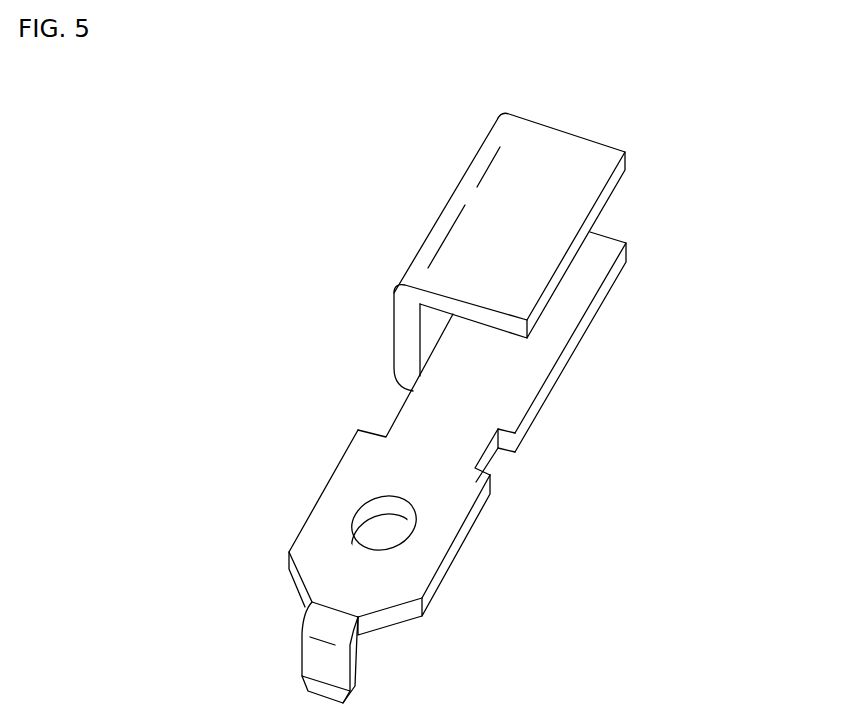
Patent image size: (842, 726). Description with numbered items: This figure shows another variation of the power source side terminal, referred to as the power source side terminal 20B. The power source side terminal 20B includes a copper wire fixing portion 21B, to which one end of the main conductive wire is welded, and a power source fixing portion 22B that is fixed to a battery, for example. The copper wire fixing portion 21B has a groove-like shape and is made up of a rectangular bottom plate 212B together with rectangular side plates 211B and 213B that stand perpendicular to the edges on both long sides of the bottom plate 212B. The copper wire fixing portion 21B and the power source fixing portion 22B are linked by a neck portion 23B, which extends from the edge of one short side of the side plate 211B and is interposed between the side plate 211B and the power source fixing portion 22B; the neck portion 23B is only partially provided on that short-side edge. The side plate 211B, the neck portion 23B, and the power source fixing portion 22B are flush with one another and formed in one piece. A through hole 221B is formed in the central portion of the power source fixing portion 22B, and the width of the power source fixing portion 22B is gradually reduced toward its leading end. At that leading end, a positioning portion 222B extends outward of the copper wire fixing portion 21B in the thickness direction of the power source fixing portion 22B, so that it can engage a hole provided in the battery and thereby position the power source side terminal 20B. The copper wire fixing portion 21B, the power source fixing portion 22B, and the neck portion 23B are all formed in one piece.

The power source side terminal 20B is at (803, 99).
The copper wire fixing portion 21B is at (630, 192).
The side plate 211B is at (590, 278).
The bottom plate 212B is at (405, 335).
The side plate 213B is at (568, 145).
The power source fixing portion 22B is at (475, 535).
The through hole 221B is at (352, 520).
The positioning portion 222B is at (309, 655).
The neck portion 23B is at (470, 452).